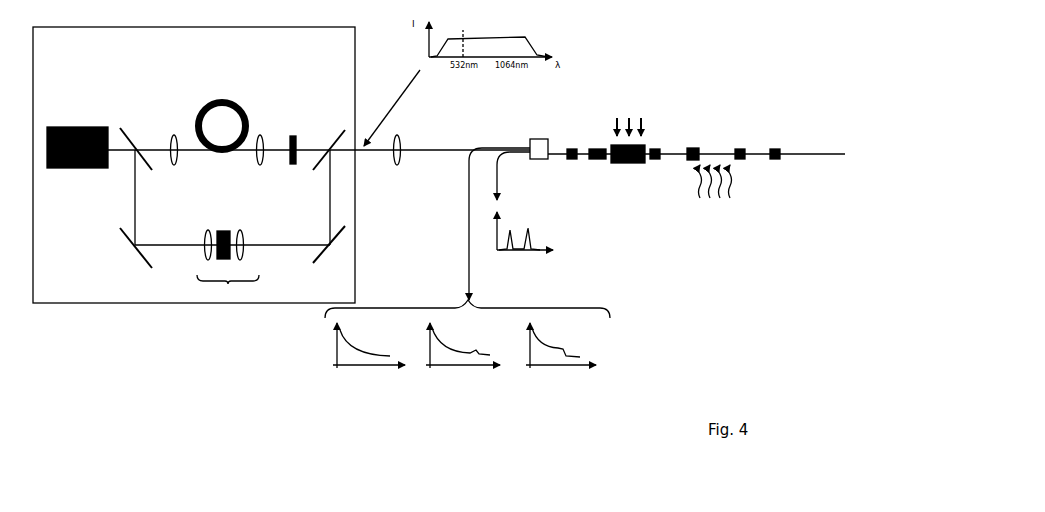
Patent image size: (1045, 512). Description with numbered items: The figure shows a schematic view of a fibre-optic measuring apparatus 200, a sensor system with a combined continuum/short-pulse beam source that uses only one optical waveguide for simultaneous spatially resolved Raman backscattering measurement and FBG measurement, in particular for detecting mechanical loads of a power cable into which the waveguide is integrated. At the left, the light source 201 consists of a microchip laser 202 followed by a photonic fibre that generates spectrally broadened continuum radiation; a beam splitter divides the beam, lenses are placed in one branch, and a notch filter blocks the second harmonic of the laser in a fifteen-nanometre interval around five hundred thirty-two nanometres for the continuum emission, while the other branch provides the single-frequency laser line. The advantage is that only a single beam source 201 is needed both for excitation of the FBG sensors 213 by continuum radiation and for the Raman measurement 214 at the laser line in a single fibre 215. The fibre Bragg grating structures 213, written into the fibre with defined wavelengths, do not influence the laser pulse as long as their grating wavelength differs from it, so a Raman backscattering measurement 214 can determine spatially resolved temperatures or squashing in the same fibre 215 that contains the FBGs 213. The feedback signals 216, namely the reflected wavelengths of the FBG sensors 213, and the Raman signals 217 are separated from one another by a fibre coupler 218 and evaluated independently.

The measuring apparatus 200 is at (632, 84).
The light source 201 is at (131, 306).
The microchip laser 202 is at (74, 124).
The fibre Bragg grating sensors 213 is at (708, 110).
The Raman backscattering measurement 214 is at (620, 342).
The fibre 215 is at (554, 148).
The feedback signals 216 is at (502, 191).
The Raman signals 217 is at (466, 231).
The fibre coupler 218 is at (535, 137).